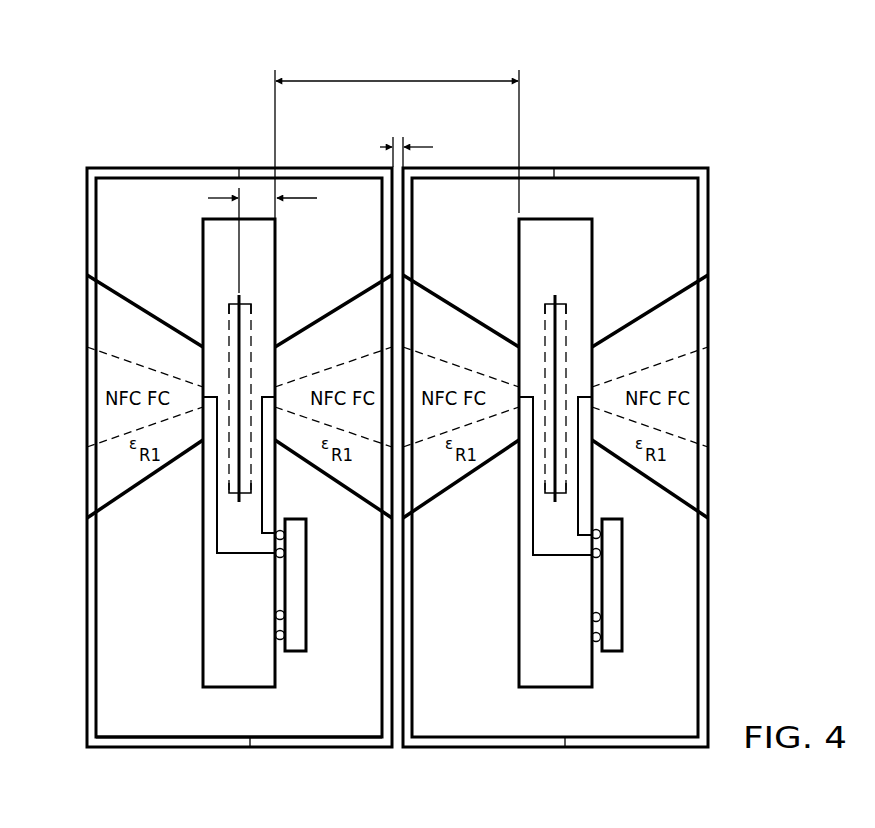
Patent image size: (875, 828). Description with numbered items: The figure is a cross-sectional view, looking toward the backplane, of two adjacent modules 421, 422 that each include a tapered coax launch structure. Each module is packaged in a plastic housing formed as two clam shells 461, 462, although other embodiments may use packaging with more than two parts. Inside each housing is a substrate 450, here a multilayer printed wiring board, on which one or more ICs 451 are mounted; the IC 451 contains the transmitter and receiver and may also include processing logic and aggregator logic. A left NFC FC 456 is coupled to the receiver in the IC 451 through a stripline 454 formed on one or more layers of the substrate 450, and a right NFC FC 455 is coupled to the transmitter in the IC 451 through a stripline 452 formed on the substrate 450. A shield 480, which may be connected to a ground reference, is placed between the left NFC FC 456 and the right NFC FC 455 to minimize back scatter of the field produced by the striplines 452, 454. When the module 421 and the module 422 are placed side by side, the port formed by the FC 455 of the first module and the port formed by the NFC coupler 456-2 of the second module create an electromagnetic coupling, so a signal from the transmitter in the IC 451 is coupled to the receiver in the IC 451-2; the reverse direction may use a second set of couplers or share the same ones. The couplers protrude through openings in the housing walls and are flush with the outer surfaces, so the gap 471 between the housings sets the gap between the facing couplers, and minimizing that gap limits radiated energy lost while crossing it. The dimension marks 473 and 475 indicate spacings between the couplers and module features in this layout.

The module 421 is at (150, 166).
The module 422 is at (645, 166).
The substrate 450 is at (212, 252).
The IC 451 is at (298, 585).
The IC 451-2 is at (612, 642).
The stripline 452 is at (263, 483).
The stripline 454 is at (215, 520).
The right NFC FC 455 is at (336, 314).
The left NFC FC 456 is at (93, 365).
The NFC coupler 456-2 is at (459, 479).
The clam shell 461 is at (320, 750).
The clam shell 462 is at (172, 750).
The gap 471 is at (420, 146).
The offset distance 473 is at (298, 200).
The antenna spacing 475 is at (395, 80).
The shield 480 is at (230, 310).